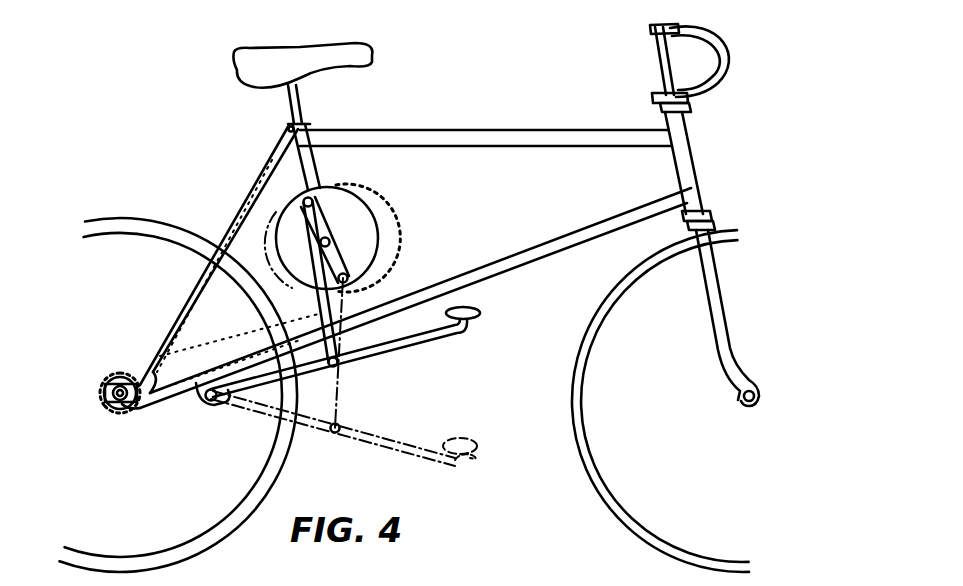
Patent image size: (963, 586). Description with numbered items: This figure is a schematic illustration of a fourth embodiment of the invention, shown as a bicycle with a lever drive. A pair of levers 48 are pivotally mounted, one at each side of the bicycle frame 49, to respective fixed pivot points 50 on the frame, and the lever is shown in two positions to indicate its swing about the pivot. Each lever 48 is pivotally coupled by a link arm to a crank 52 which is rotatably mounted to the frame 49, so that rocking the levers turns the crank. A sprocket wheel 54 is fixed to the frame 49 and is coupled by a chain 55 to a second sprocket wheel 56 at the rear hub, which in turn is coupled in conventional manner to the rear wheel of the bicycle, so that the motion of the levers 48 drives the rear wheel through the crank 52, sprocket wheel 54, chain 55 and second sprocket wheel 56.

The lever 48 is at (385, 352).
The bicycle frame 49 is at (470, 131).
The fixed pivot point 50 is at (210, 405).
The crank 52 is at (346, 260).
The sprocket wheel 54 is at (350, 207).
The chain 55 is at (146, 338).
The second sprocket wheel 56 is at (118, 412).